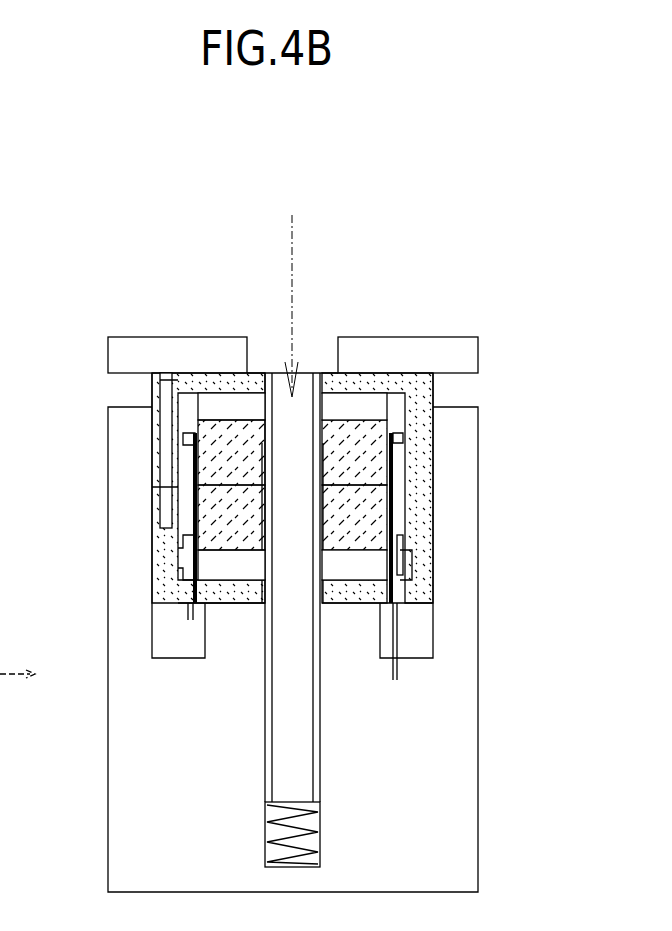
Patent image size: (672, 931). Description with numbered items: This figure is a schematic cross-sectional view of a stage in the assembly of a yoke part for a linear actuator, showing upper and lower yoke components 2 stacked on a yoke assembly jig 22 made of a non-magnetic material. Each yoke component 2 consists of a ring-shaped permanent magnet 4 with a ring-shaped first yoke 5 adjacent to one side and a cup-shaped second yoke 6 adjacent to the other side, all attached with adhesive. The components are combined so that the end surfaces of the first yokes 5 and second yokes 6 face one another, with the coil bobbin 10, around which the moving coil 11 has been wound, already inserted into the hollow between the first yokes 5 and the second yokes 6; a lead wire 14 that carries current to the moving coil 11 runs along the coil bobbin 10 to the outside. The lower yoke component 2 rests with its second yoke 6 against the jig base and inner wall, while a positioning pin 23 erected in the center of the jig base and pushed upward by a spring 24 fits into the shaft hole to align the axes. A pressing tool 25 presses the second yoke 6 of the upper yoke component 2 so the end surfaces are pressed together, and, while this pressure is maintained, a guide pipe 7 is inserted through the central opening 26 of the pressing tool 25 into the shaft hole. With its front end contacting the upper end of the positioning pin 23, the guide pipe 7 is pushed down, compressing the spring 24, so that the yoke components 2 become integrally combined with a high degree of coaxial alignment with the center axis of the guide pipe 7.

The yoke component 2 is at (435, 455).
The permanent magnet 4 is at (217, 412).
The first yoke 5 is at (207, 432).
The second yoke 6 is at (425, 390).
The guide pipe 7 is at (315, 373).
The coil bobbin 10 is at (190, 588).
The moving coil 11 is at (190, 466).
The lead wire 14 is at (400, 640).
The yoke assembly jig 22 is at (463, 650).
The positioning pin 23 is at (305, 715).
The spring 24 is at (300, 817).
The pressing tool 25 is at (153, 355).
The central opening 26 is at (249, 368).